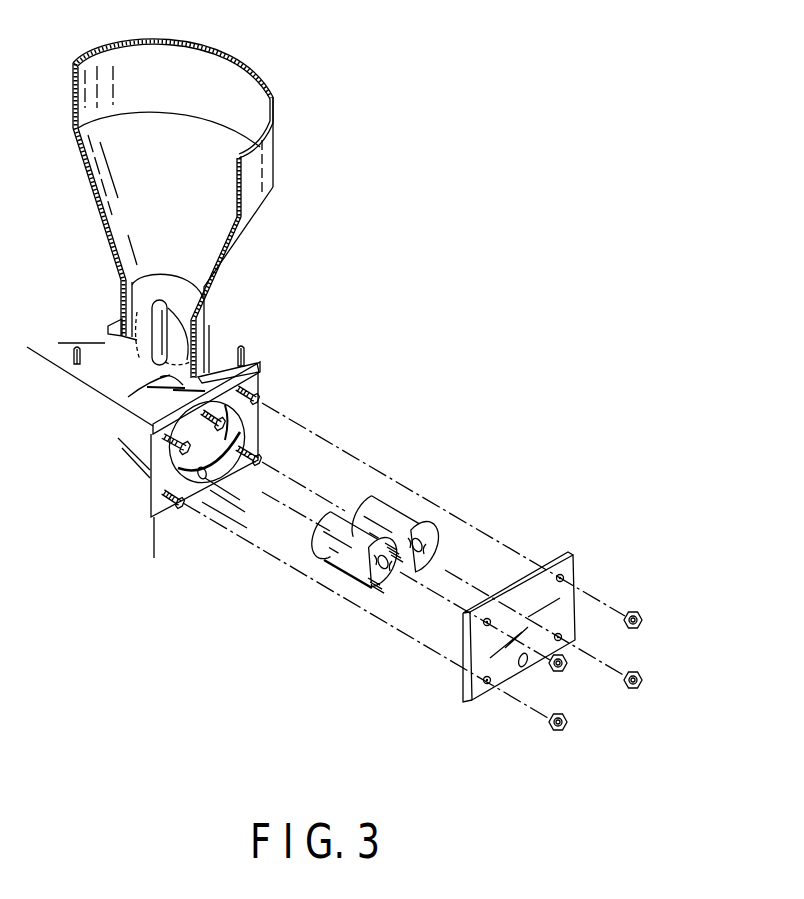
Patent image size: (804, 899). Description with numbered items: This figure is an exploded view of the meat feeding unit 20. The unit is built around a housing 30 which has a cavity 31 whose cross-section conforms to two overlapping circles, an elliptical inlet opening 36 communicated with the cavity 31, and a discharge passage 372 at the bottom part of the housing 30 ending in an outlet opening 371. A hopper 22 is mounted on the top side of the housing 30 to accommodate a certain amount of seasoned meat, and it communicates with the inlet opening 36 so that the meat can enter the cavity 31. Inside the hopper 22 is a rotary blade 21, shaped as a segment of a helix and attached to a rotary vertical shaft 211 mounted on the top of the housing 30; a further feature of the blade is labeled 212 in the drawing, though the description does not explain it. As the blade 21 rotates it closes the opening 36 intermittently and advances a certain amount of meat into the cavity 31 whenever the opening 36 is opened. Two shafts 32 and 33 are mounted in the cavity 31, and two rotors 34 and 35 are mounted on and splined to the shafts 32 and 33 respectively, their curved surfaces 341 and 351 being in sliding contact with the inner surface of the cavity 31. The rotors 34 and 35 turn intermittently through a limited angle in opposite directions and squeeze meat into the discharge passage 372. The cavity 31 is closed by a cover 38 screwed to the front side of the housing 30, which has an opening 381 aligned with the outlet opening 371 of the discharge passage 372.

The meat feeding unit 20 is at (262, 240).
The hopper 22 is at (264, 152).
The rotary blade 21 is at (180, 290).
The slot in neck 212 is at (183, 340).
The rotary vertical shaft 211 is at (153, 337).
The housing 30 is at (223, 350).
The cavity 31 is at (231, 420).
The shaft 32 is at (203, 427).
The shaft 33 is at (177, 453).
The inlet opening 36 is at (128, 397).
The outlet opening 371 is at (237, 463).
The discharge passage 372 is at (163, 453).
The rotor 34 is at (412, 515).
The rotor 35 is at (353, 585).
The curved surface 341 is at (436, 547).
The curved surface 351 is at (402, 556).
The cover 38 is at (552, 647).
The opening 381 is at (526, 667).